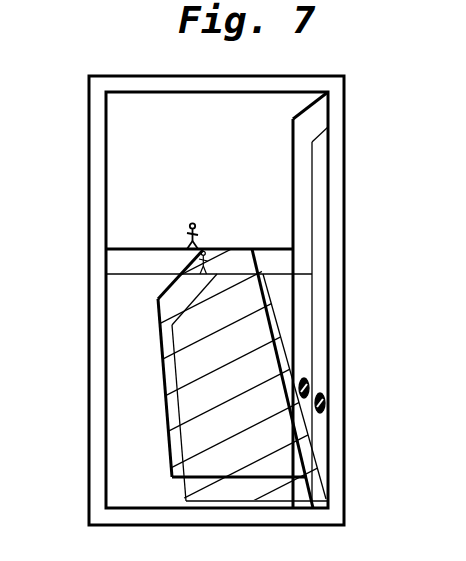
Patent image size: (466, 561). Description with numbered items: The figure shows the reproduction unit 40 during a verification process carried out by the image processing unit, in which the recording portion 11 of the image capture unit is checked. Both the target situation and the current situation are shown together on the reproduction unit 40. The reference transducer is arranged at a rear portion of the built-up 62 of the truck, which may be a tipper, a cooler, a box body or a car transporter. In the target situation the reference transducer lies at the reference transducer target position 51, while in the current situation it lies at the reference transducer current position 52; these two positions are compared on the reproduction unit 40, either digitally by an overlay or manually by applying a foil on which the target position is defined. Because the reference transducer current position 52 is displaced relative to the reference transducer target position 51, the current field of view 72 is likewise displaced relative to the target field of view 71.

The reproduction unit 40 is at (89, 147).
The recording portion 11 is at (167, 220).
The vehicle built-up 62 is at (320, 328).
The reference transducer target position 51 is at (308, 377).
The reference transducer current position 52 is at (327, 410).
The target field of view 71 is at (163, 382).
The current field of view 72 is at (180, 493).